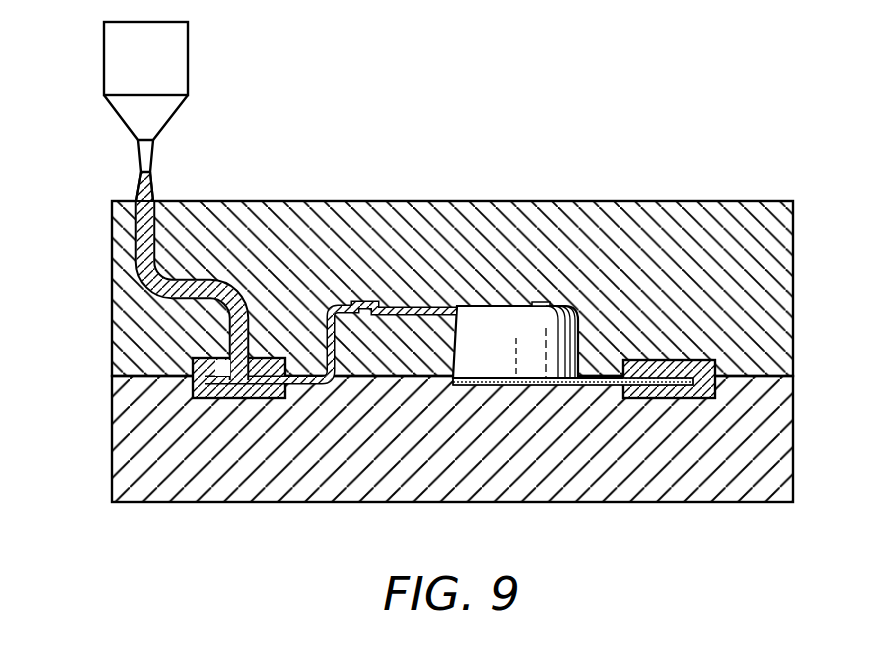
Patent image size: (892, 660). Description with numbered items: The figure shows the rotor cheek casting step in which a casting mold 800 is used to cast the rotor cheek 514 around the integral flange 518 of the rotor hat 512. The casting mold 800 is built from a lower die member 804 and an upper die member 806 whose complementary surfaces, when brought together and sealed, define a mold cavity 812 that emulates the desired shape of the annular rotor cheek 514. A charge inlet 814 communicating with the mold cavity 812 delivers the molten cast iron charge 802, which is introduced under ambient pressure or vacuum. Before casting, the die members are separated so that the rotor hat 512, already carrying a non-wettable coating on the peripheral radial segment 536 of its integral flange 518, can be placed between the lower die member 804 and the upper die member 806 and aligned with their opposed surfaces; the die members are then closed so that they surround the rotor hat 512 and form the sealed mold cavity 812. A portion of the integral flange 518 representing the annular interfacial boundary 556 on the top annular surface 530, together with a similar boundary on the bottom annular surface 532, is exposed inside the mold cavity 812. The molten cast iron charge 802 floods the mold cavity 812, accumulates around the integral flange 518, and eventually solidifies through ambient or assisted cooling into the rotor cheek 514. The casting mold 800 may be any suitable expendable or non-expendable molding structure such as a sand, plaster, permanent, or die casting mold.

The casting mold 800 is at (397, 351).
The molten cast iron charge 802 is at (140, 177).
The lower die member 804 is at (127, 467).
The upper die member 806 is at (128, 305).
The mold cavity 812 is at (208, 392).
The charge inlet 814 is at (146, 240).
The peripheral radial segment 536 is at (212, 360).
The annular interfacial boundary 556 is at (235, 380).
The rotor hat 512 is at (574, 304).
The integral flange 518 is at (592, 377).
The top annular surface 530 is at (610, 377).
The rotor cheek 514 is at (673, 352).
The bottom annular surface 532 is at (610, 387).